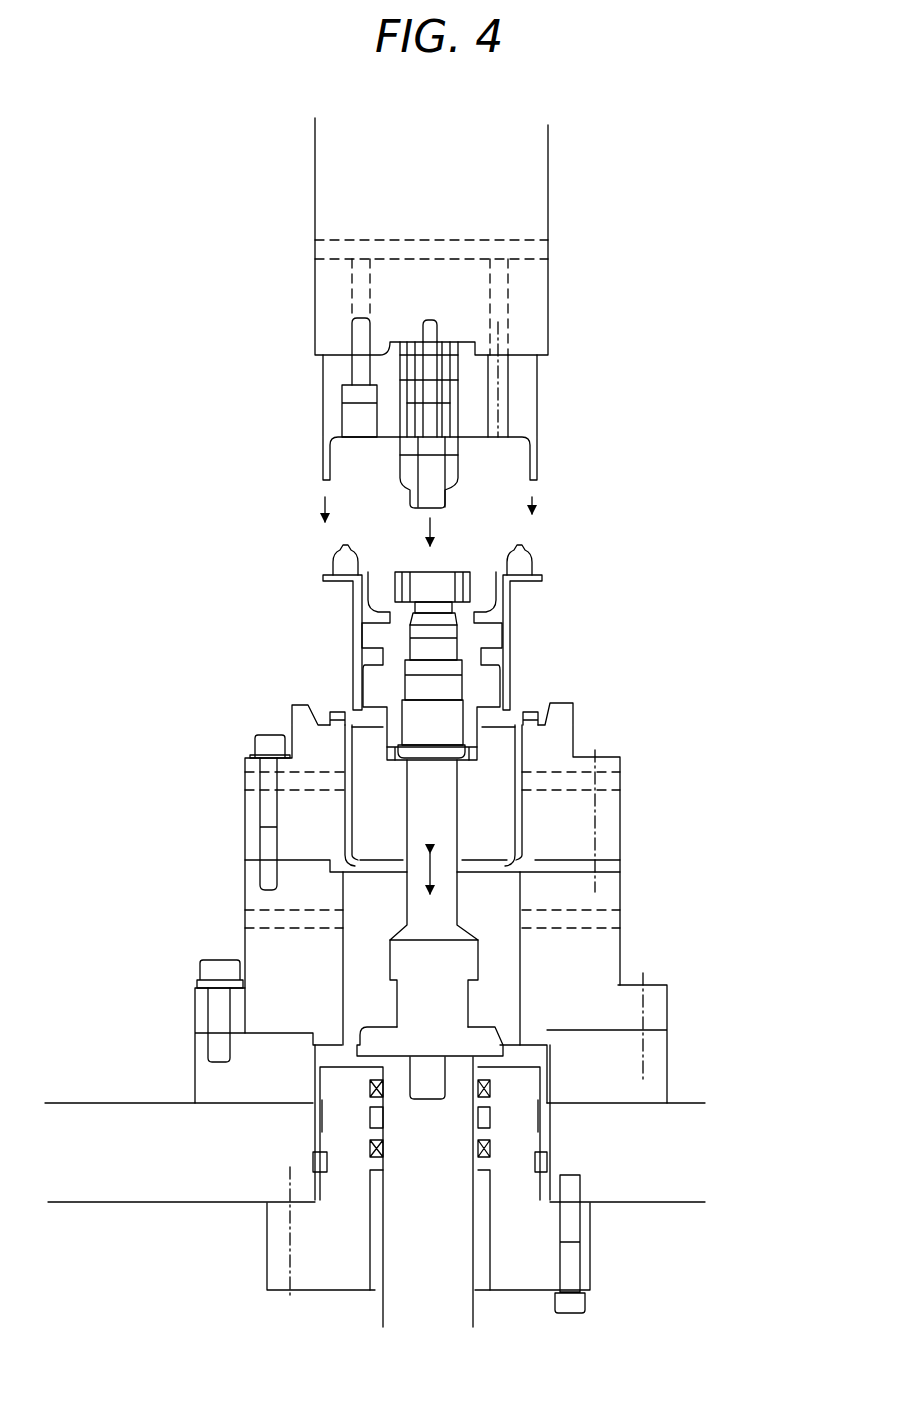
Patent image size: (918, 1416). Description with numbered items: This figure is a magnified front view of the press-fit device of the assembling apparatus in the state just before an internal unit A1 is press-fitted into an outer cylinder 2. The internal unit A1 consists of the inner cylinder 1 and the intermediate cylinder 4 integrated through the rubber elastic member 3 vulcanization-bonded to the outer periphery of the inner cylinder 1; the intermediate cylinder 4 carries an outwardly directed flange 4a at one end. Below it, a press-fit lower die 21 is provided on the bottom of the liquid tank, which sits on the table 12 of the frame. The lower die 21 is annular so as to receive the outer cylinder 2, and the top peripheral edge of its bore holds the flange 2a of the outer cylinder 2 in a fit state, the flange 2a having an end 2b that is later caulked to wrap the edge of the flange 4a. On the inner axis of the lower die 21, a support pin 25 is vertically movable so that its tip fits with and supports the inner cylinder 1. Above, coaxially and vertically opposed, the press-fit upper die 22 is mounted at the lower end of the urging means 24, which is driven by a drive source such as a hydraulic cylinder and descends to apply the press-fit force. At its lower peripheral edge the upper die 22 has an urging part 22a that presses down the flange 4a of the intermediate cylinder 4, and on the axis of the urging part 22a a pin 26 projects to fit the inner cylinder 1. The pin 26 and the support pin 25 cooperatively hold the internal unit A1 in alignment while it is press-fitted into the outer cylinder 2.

The inner cylinder 1 is at (395, 658).
The outer cylinder 2 is at (484, 836).
The flange 2a is at (522, 720).
The end 2b is at (530, 720).
The rubber elastic member 3 is at (368, 608).
The intermediate cylinder 4 is at (512, 655).
The outwardly directed flange 4a is at (540, 580).
The internal unit A1 is at (430, 652).
The table 12 is at (157, 1185).
The press-fit lower die 21 is at (615, 836).
The press-fit upper die 22 is at (320, 420).
The urging part 22a is at (320, 470).
The urging means 24 is at (532, 175).
The support pin 25 is at (422, 790).
The pin 26 is at (455, 478).